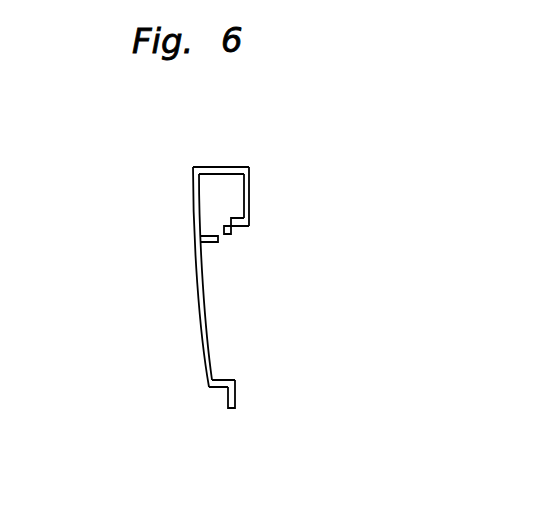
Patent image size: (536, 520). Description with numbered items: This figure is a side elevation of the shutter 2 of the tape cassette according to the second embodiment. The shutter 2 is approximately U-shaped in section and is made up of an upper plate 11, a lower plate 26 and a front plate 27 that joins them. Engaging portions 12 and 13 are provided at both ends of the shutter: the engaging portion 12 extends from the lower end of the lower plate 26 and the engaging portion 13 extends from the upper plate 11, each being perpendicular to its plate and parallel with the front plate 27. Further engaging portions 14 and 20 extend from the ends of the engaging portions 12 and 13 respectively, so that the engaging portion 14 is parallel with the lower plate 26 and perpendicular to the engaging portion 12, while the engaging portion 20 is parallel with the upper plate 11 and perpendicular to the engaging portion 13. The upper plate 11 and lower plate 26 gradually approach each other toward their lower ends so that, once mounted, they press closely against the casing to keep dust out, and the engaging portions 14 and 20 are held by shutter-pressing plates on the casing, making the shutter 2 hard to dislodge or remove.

The shutter 2 is at (335, 147).
The upper plate 11 is at (250, 192).
The engaging portion 12 is at (226, 381).
The engaging portion 13 is at (236, 229).
The engaging portion 14 is at (227, 397).
The engaging portion 20 is at (222, 241).
The lower plate 26 is at (195, 278).
The front plate 27 is at (222, 167).